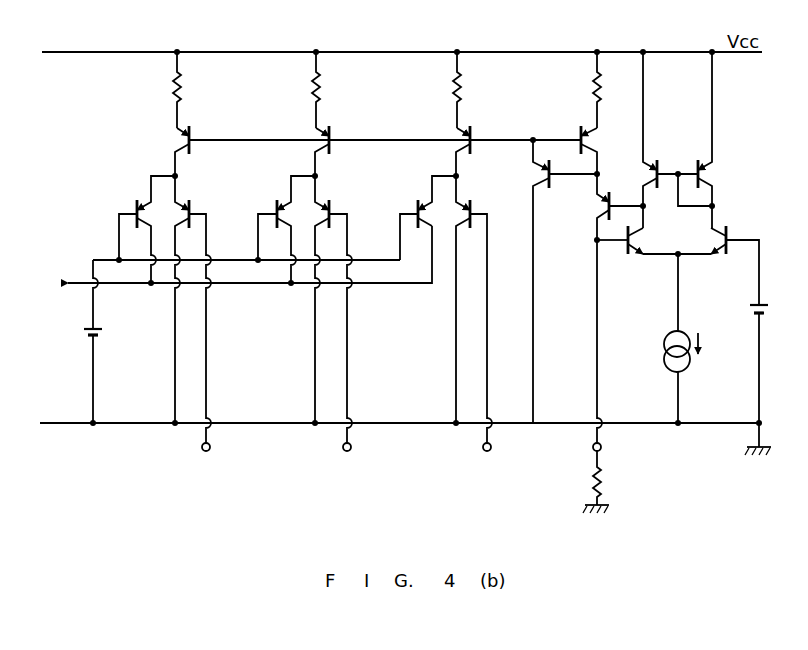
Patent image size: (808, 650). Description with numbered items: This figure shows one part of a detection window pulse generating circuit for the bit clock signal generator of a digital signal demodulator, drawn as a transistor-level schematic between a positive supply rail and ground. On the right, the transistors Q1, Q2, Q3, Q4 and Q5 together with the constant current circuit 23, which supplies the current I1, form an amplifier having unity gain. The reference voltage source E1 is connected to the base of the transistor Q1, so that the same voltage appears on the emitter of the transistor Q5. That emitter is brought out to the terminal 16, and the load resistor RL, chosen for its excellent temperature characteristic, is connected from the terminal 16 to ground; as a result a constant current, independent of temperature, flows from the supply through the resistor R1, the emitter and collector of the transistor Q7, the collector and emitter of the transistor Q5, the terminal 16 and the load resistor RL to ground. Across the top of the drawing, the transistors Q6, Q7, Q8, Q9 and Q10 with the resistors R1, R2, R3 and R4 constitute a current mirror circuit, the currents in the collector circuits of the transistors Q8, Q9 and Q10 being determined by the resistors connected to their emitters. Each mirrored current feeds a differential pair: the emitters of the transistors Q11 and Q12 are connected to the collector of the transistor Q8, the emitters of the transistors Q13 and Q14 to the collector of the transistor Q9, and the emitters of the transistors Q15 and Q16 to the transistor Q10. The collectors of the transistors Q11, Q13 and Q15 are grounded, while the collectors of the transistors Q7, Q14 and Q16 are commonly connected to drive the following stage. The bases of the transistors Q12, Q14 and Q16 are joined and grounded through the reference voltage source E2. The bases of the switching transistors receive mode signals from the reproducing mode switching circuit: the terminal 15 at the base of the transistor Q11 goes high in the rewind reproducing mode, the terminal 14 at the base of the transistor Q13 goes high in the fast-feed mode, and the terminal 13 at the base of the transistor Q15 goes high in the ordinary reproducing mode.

The terminal 13 is at (210, 446).
The terminal 14 is at (351, 446).
The terminal 15 is at (491, 446).
The terminal 16 is at (601, 446).
The constant current circuit 23 is at (668, 347).
The transistor Q1 is at (718, 238).
The transistor Q2 is at (636, 240).
The transistor Q3 is at (705, 170).
The transistor Q4 is at (650, 170).
The transistor Q5 is at (606, 204).
The transistor Q6 is at (541, 170).
The transistor Q7 is at (591, 146).
The transistor Q8 is at (463, 144).
The transistor Q9 is at (322, 144).
The transistor Q10 is at (182, 144).
The transistor Q11 is at (460, 200).
The transistor Q12 is at (414, 201).
The transistor Q13 is at (321, 200).
The transistor Q14 is at (272, 201).
The transistor Q15 is at (181, 200).
The transistor Q16 is at (134, 201).
The resistor R1 is at (583, 90).
The resistor R2 is at (442, 90).
The resistor R3 is at (301, 90).
The resistor R4 is at (162, 90).
The load resistor RL is at (607, 482).
The reference voltage source E1 is at (765, 310).
The reference voltage source E2 is at (98, 330).
The current I1 is at (710, 348).